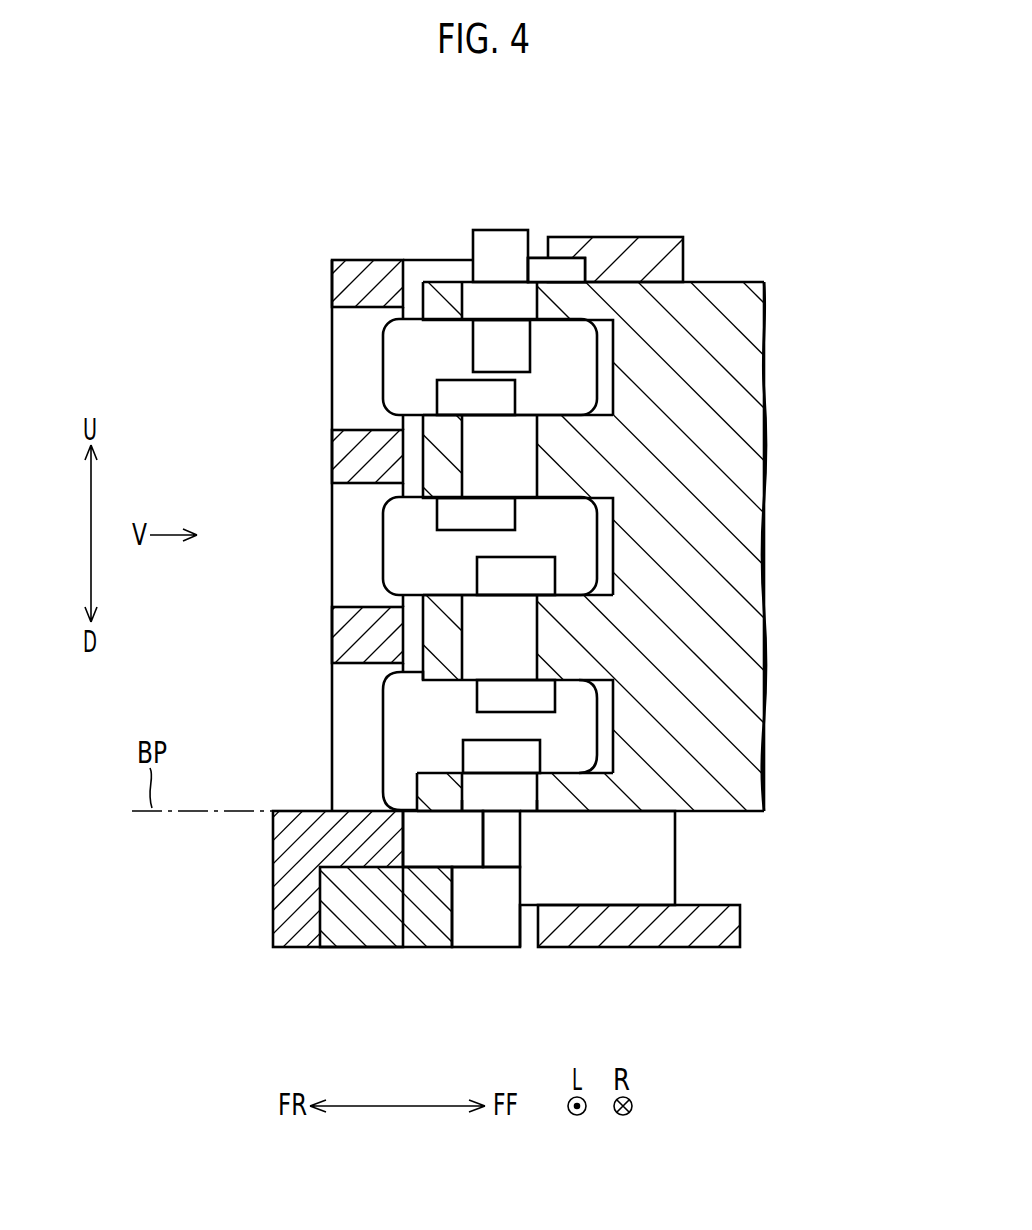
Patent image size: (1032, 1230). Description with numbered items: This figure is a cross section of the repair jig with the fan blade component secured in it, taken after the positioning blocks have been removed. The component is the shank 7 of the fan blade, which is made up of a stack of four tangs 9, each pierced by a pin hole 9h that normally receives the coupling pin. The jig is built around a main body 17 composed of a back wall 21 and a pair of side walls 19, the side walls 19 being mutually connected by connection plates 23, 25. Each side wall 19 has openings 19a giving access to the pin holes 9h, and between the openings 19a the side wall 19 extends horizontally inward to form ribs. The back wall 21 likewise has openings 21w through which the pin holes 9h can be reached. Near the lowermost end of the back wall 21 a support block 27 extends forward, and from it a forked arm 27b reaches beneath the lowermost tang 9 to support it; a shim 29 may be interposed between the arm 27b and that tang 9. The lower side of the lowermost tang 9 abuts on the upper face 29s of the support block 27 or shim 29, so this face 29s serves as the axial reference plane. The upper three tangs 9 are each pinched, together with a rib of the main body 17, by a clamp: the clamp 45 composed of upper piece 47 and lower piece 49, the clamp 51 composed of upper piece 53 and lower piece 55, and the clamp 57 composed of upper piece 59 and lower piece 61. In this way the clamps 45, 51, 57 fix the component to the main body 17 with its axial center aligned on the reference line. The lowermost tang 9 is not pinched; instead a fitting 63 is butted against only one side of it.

The shank 7 is at (731, 287).
The tang 9 is at (600, 290).
The pin hole 9h is at (534, 307).
The main body 17 is at (318, 282).
The side wall 19 is at (665, 853).
The opening 19a is at (610, 364).
The back wall 21 is at (273, 868).
The opening 21w is at (343, 345).
The connection plate 23 is at (642, 948).
The connection plate 25 is at (650, 240).
The support block 27 is at (377, 948).
The arm 27b is at (482, 948).
The shim 29 is at (482, 840).
The upper face 29s is at (500, 803).
The clamp 45 is at (474, 246).
The upper piece 47 is at (493, 241).
The lower piece 49 is at (478, 351).
The clamp 51 is at (366, 452).
The upper piece 53 is at (443, 396).
The lower piece 55 is at (443, 517).
The clamp 57 is at (386, 634).
The upper piece 59 is at (483, 572).
The lower piece 61 is at (483, 698).
The fitting 63 is at (467, 758).